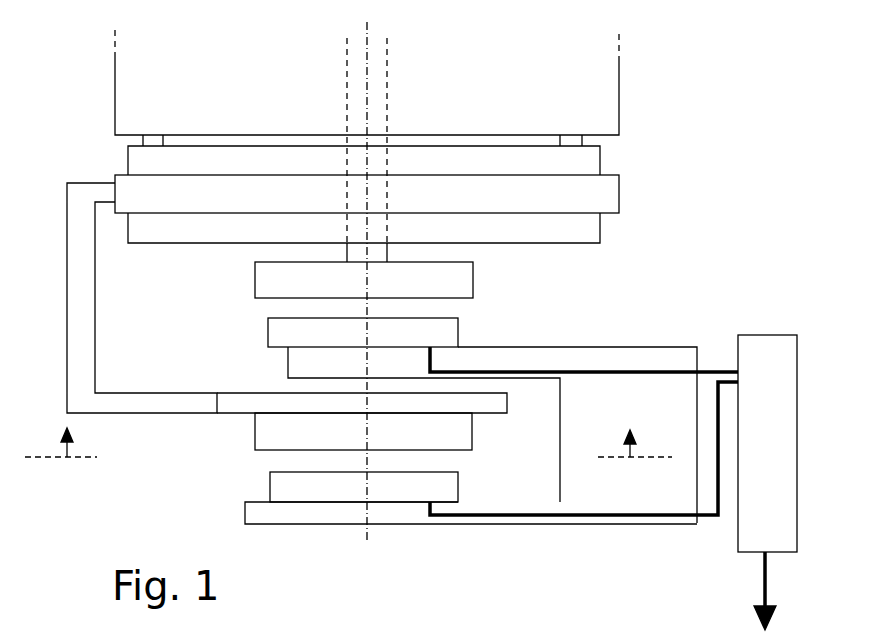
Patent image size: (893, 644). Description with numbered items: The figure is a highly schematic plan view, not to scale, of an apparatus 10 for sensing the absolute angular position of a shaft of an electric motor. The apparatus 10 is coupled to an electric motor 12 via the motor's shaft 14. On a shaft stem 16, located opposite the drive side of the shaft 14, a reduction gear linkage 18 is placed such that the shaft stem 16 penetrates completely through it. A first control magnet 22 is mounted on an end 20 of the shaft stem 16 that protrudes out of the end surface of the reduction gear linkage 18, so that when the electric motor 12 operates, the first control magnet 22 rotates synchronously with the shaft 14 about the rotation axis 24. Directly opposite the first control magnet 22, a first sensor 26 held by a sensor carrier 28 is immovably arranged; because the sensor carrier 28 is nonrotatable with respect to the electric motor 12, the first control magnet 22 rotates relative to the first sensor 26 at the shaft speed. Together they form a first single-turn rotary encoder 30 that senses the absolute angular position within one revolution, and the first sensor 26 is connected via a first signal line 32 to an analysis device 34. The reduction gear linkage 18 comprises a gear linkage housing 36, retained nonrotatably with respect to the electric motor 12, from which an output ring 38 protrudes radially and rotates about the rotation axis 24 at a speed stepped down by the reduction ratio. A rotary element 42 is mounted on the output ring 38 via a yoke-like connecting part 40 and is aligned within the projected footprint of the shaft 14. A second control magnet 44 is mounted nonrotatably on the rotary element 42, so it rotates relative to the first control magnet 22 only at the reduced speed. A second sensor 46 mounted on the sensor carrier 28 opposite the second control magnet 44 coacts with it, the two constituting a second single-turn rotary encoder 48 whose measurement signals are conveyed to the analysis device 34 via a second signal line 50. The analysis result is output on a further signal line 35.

The apparatus 10 is at (664, 278).
The electric motor 12 is at (600, 118).
The shaft 14 is at (387, 98).
The shaft stem 16 is at (387, 183).
The reduction gear linkage 18 is at (110, 158).
The end 20 is at (375, 253).
The first control magnet 22 is at (465, 285).
The rotation axis 24 is at (368, 541).
The first sensor 26 is at (448, 333).
The sensor carrier 28 is at (645, 505).
The first single-turn rotary encoder 30 is at (222, 300).
The first signal line 32 is at (565, 368).
The analysis device 34 is at (760, 336).
The further signal line 35 is at (768, 583).
The gear linkage housing 36 is at (590, 233).
The output ring 38 is at (612, 188).
The connecting part 40 is at (138, 403).
The rotary element 42 is at (236, 400).
The second control magnet 44 is at (258, 432).
The second sensor 46 is at (272, 483).
The second single-turn rotary encoder 48 is at (468, 467).
The second signal line 50 is at (565, 515).